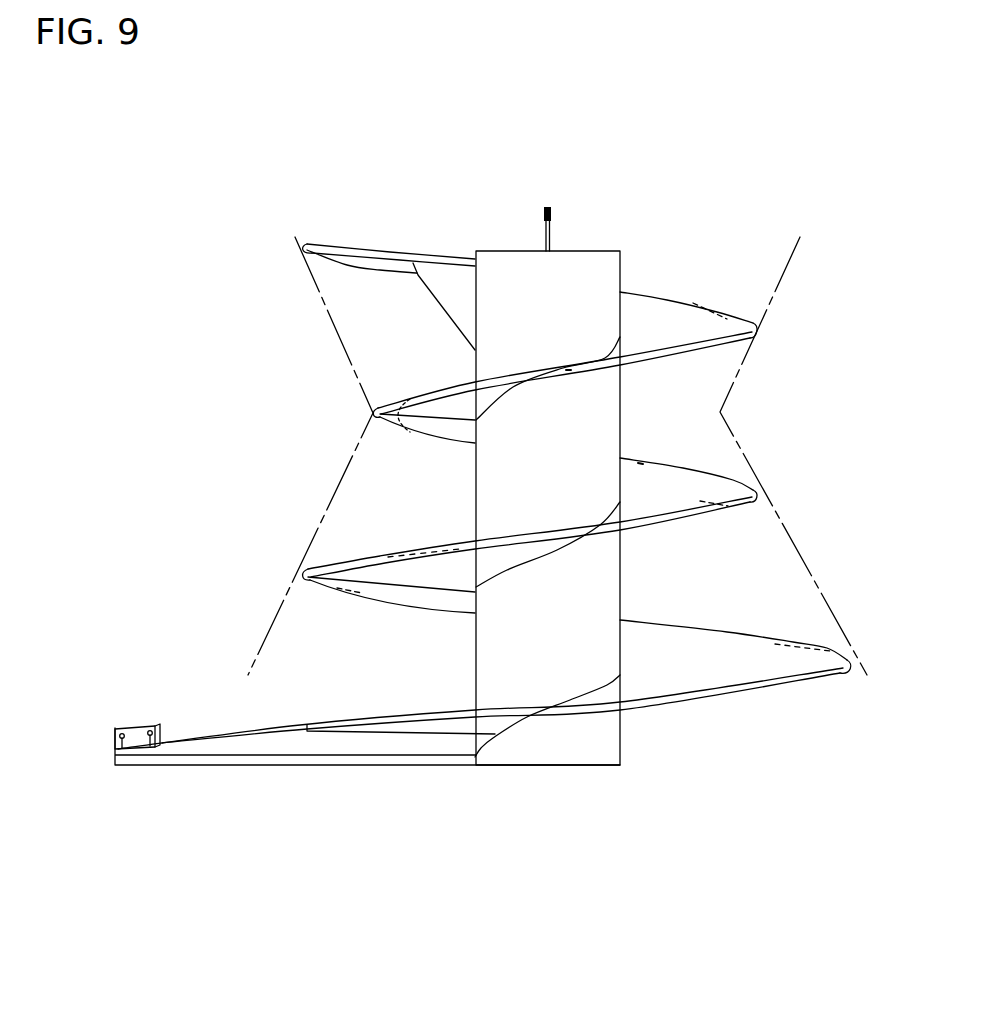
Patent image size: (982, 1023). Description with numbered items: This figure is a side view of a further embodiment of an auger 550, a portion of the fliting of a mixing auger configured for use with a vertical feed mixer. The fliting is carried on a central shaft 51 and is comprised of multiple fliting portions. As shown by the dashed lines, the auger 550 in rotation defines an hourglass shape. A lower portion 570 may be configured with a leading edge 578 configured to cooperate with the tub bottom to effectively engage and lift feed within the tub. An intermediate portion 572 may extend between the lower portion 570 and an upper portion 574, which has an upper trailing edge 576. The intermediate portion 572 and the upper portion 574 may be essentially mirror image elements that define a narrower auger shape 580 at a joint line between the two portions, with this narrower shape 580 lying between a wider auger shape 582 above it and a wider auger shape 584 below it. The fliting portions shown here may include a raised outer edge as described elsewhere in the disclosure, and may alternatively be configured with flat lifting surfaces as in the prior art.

The auger 550 is at (467, 232).
The central shaft 51 is at (563, 303).
The lower portion 570 is at (670, 668).
The intermediate portion 572 is at (685, 491).
The upper portion 574 is at (655, 313).
The upper trailing edge 576 is at (355, 247).
The leading edge 578 is at (221, 764).
The narrower auger shape 580 is at (371, 413).
The wider auger shape 582 is at (295, 250).
The wider auger shape 584 is at (300, 573).